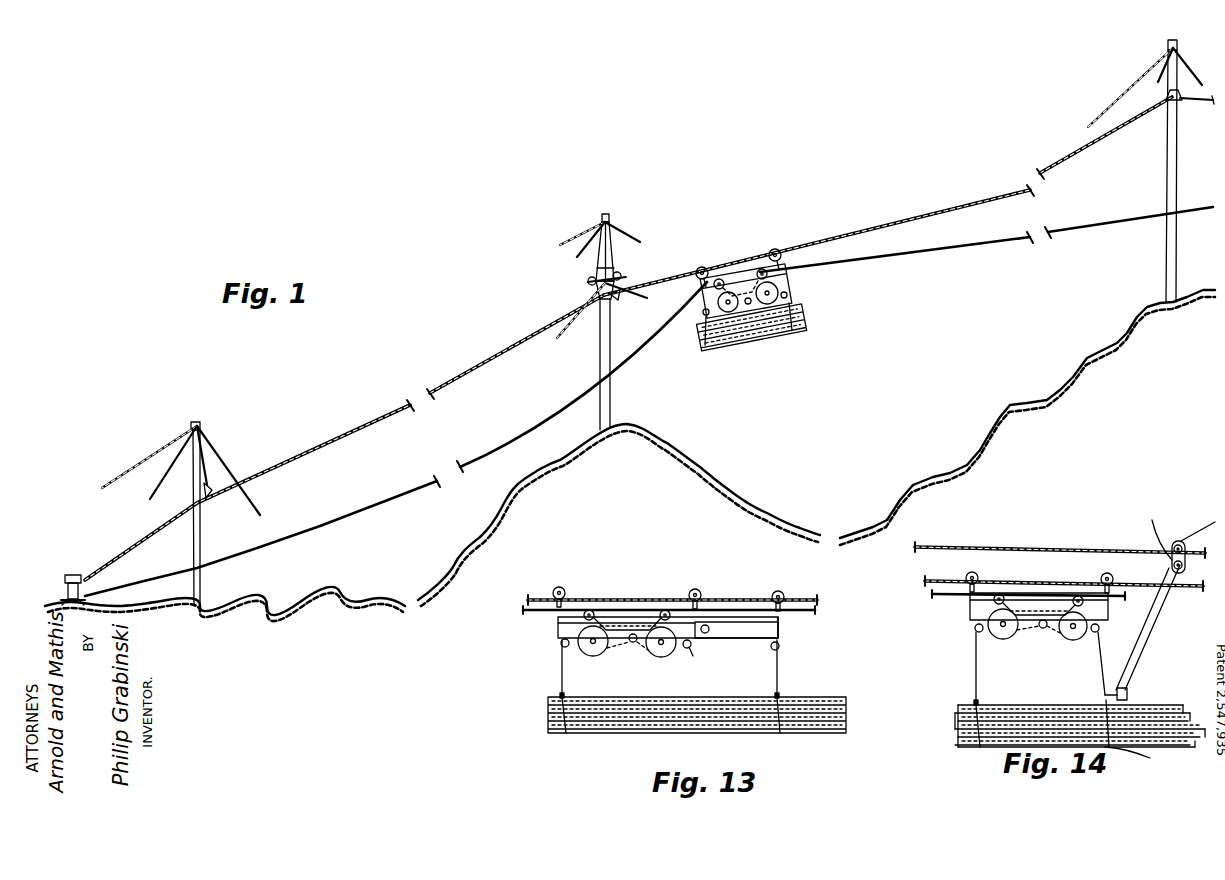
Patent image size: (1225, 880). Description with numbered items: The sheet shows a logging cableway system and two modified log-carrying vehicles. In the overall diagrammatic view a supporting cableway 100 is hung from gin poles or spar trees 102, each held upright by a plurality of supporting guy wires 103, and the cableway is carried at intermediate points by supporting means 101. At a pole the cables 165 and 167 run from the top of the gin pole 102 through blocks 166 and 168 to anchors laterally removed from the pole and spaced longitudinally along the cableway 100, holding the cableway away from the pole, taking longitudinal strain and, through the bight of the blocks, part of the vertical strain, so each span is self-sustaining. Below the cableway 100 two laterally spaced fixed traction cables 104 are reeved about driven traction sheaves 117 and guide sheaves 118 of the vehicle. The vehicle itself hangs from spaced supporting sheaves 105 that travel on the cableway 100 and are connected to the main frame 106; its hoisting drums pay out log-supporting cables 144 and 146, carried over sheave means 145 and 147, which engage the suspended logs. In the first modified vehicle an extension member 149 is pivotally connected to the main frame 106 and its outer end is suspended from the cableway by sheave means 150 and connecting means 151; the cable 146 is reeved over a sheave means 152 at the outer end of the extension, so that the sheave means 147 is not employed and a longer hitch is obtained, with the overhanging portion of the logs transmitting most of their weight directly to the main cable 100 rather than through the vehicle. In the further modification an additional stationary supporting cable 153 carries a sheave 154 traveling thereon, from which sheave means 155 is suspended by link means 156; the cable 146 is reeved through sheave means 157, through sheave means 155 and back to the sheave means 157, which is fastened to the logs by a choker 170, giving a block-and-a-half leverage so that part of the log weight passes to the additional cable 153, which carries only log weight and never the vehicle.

In FIG. 1, the supporting cableway 100 is at (403, 402).
In FIG. 13, the supporting cableway 100 is at (745, 599).
In FIG. 14, the supporting cableway 100 is at (941, 581).
In FIG. 1, the supporting means 101 is at (221, 473).
In FIG. 1, the gin pole 102 is at (193, 548).
In FIG. 1, the supporting guy wire 103 is at (160, 479).
In FIG. 1, the fixed traction cable 104 is at (461, 469).
In FIG. 13, the fixed traction cable 104 is at (820, 610).
In FIG. 14, the fixed traction cable 104 is at (937, 596).
In FIG. 1, the supporting sheave 105 is at (773, 249).
In FIG. 13, the supporting sheave 105 is at (567, 582).
In FIG. 14, the supporting sheave 105 is at (975, 571).
In FIG. 1, the main frame 106 is at (790, 269).
In FIG. 13, the main frame 106 is at (623, 618).
In FIG. 14, the main frame 106 is at (969, 612).
In FIG. 1, the driven traction sheave 117 is at (767, 336).
In FIG. 13, the driven traction sheave 117 is at (593, 656).
In FIG. 14, the driven traction sheave 117 is at (1065, 636).
In FIG. 1, the guide sheave 118 is at (760, 269).
In FIG. 13, the guide sheave 118 is at (589, 609).
In FIG. 14, the guide sheave 118 is at (1073, 598).
In FIG. 1, the log-supporting cable 144 is at (703, 328).
In FIG. 13, the log-supporting cable 144 is at (558, 666).
In FIG. 14, the log-supporting cable 144 is at (972, 656).
In FIG. 1, the sheave means 145 is at (740, 346).
In FIG. 13, the sheave means 145 is at (561, 644).
In FIG. 14, the sheave means 145 is at (975, 630).
In FIG. 1, the log-supporting cable 146 is at (797, 304).
In FIG. 13, the log-supporting cable 146 is at (779, 677).
In FIG. 14, the log-supporting cable 146 is at (1101, 674).
In FIG. 1, the sheave means 147 is at (790, 293).
In FIG. 13, the sheave means 147 is at (690, 650).
In FIG. 14, the sheave means 147 is at (1092, 633).
In FIG. 13, the extension member 149 is at (748, 632).
In FIG. 13, the sheave means 150 is at (779, 590).
In FIG. 13, the connecting means 151 is at (779, 619).
In FIG. 13, the sheave means 152 is at (773, 651).
In FIG. 14, the additional stationary supporting cable 153 is at (1024, 546).
In FIG. 14, the sheave 154 is at (1198, 535).
In FIG. 14, the sheave means 155 is at (1148, 591).
In FIG. 14, the link means 156 is at (1180, 540).
In FIG. 14, the sheave means 157 is at (1128, 694).
In FIG. 1, the cable 165 is at (617, 270).
In FIG. 1, the block 166 is at (622, 279).
In FIG. 1, the cable 167 is at (597, 268).
In FIG. 1, the block 168 is at (588, 283).
In FIG. 14, the choker 170 is at (1140, 755).